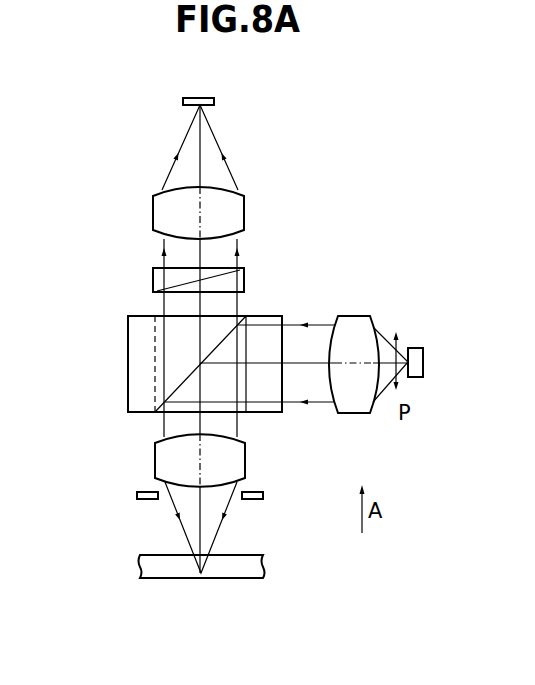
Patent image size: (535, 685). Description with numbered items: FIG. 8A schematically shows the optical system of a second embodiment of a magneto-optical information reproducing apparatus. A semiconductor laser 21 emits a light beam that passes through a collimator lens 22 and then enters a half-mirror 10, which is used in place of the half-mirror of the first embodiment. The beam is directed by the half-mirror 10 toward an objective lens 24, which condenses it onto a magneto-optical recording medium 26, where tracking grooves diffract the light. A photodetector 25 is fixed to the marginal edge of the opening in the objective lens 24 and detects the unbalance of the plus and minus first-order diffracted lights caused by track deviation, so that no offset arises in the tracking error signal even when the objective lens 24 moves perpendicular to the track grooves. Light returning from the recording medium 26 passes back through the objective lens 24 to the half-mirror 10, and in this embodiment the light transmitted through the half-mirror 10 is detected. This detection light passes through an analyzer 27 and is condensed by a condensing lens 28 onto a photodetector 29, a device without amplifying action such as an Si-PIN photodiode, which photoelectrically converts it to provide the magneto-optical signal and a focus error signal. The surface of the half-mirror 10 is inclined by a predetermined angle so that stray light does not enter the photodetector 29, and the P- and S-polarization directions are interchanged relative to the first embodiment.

The photodetector 29 is at (183, 102).
The condensing lens 28 is at (153, 207).
The analyzer 27 is at (153, 278).
The half-mirror 10 is at (280, 316).
The collimator lens 22 is at (352, 319).
The semiconductor laser 21 is at (418, 348).
The objective lens 24 is at (155, 458).
The photodetector 25 is at (137, 496).
The magneto-optical recording medium 26 is at (140, 565).